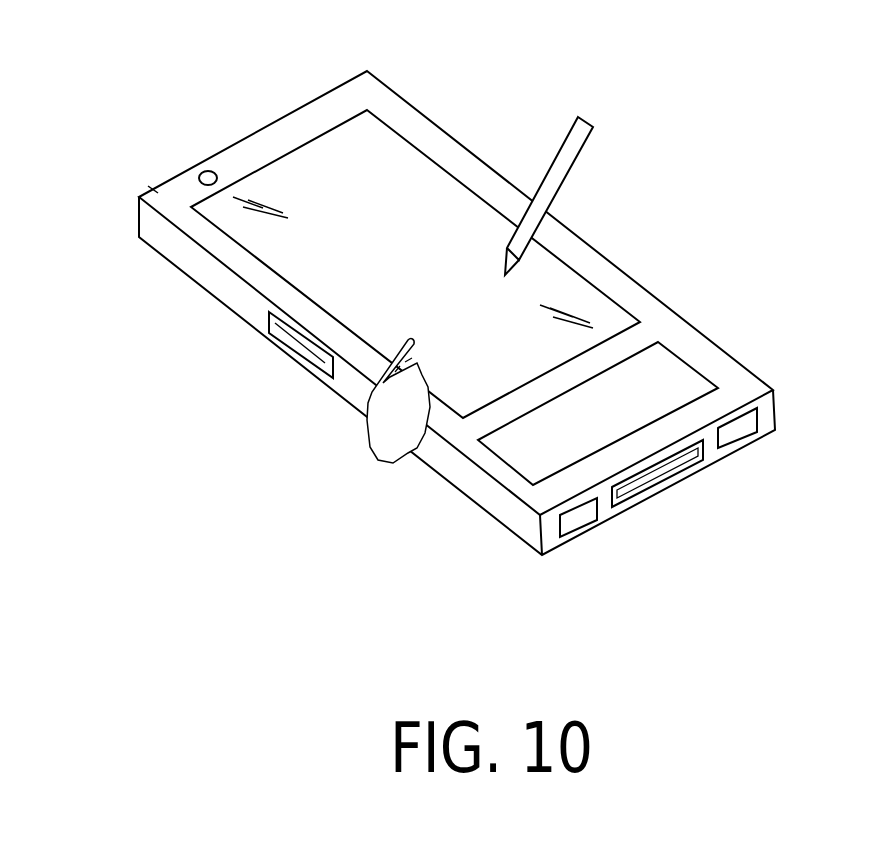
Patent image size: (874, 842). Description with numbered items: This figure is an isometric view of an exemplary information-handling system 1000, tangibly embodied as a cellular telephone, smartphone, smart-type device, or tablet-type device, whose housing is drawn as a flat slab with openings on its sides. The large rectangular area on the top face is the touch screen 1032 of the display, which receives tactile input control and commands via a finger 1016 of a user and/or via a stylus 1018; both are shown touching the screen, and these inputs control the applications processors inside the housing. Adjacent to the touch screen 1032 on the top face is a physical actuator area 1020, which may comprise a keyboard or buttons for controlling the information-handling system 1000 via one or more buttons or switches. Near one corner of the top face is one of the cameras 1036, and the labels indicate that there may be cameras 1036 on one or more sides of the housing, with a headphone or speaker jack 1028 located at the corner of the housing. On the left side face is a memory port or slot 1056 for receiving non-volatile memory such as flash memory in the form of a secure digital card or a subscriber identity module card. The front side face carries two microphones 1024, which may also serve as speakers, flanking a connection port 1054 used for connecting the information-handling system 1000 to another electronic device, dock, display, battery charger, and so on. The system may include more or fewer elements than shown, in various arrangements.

The information-handling system 1000 is at (465, 97).
The finger 1016 is at (407, 337).
The stylus 1018 is at (563, 142).
The physical actuator area 1020 is at (667, 380).
The microphones 1024 is at (580, 525).
The headphone or speaker jack 1028 is at (152, 188).
The touch screen 1032 is at (437, 270).
The cameras 1036 is at (322, 97).
The connection port 1054 is at (673, 480).
The memory port or slot 1056 is at (278, 342).